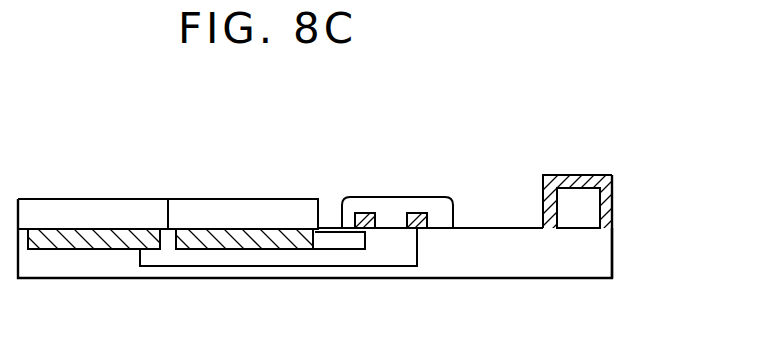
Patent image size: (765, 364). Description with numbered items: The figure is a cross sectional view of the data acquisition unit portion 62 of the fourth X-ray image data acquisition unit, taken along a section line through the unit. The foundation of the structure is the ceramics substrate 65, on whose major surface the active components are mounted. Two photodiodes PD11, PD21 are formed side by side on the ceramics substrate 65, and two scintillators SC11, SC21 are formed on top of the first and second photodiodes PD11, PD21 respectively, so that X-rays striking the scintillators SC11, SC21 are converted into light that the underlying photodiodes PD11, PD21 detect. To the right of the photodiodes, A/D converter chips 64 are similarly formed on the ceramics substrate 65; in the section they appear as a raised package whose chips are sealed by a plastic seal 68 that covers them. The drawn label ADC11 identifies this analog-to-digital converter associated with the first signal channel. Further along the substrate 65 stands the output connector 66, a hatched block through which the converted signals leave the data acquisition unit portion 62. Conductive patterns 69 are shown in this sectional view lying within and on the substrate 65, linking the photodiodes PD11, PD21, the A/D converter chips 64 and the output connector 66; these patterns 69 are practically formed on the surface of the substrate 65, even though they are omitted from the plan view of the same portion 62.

The data acquisition unit portion 62 is at (680, 226).
The A/D converter chip 64 is at (405, 196).
The ceramics substrate 65 is at (356, 273).
The output connector 66 is at (603, 152).
The plastic seal 68 is at (458, 208).
The conductive pattern 69 is at (391, 248).
The scintillator SC11 is at (87, 206).
The scintillator SC21 is at (247, 206).
The photodiode PD11 is at (82, 273).
The photodiode PD21 is at (233, 251).
The analog-to-digital converter ADC11 is at (377, 219).